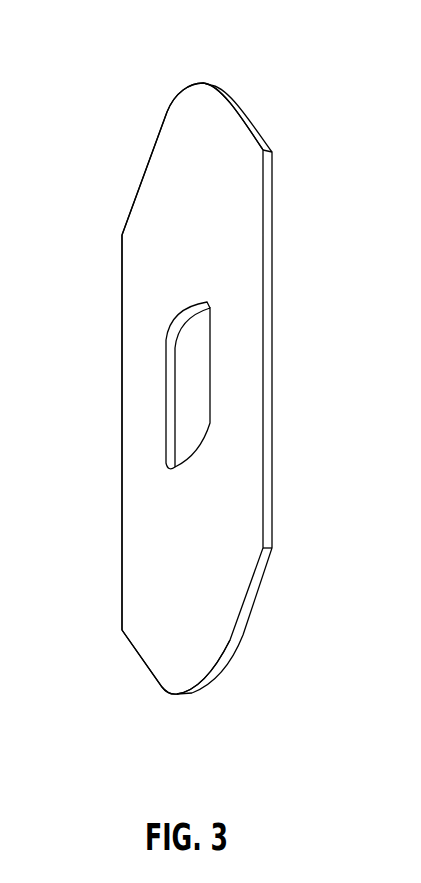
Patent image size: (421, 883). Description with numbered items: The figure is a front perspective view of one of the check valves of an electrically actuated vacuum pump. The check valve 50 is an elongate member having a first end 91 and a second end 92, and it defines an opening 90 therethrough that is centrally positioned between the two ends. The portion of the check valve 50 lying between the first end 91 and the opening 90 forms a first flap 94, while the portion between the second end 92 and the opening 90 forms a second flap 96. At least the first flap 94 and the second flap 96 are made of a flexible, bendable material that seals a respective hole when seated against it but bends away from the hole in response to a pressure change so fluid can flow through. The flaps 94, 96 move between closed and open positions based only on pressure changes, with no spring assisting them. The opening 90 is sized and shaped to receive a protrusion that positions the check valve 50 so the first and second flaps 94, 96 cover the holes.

The check valve 50 is at (273, 210).
The opening 90 is at (193, 390).
The first end 91 is at (200, 82).
The second end 92 is at (193, 695).
The first flap 94 is at (172, 180).
The second flap 96 is at (158, 575).